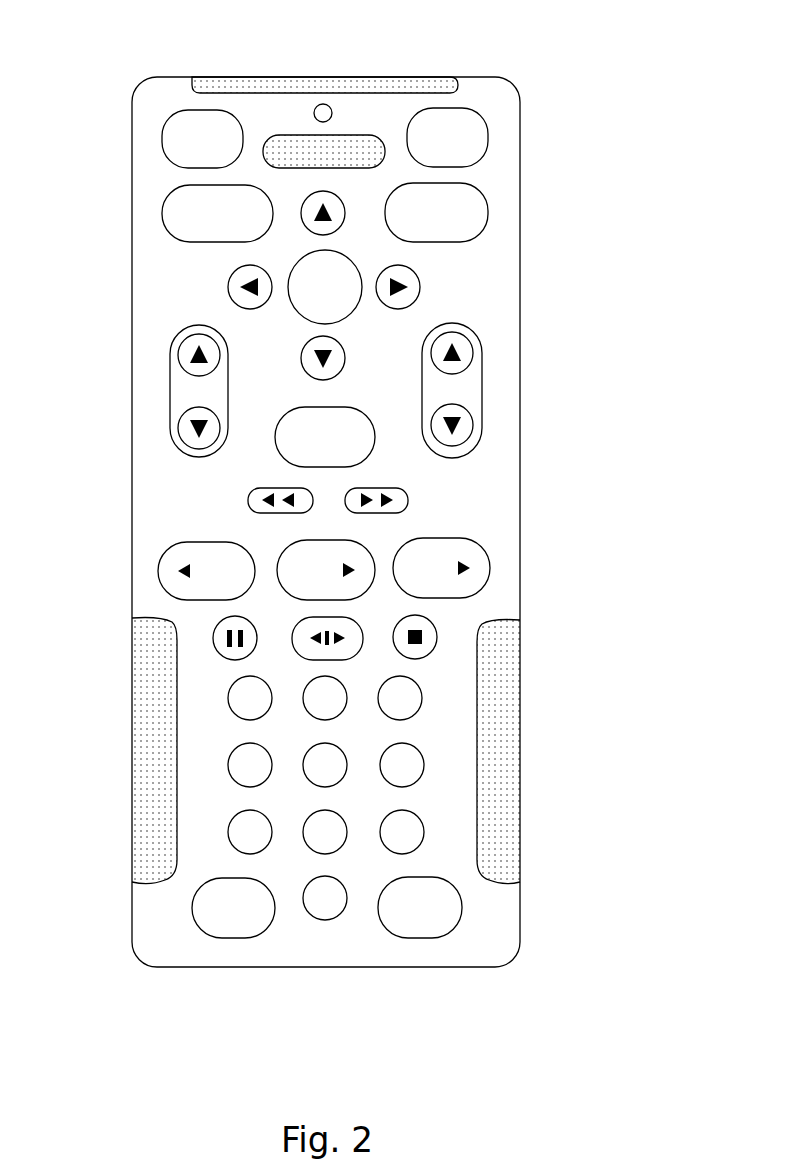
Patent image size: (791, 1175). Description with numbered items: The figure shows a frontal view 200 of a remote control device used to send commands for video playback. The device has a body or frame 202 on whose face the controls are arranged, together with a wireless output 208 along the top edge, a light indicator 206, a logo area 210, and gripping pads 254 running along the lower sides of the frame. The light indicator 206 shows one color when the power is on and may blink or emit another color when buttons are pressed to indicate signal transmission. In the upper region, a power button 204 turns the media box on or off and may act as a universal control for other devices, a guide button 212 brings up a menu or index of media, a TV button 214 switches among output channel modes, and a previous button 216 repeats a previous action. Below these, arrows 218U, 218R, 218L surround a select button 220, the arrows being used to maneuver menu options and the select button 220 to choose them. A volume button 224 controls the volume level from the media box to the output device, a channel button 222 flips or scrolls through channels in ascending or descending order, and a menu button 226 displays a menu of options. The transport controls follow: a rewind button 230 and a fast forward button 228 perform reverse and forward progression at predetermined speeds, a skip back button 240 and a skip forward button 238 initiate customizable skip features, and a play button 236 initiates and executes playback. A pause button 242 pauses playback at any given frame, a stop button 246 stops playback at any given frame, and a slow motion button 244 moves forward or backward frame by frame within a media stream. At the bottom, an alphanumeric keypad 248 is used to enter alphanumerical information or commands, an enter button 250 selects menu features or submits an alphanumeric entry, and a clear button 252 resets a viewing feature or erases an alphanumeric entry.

The frontal view 200 is at (671, 130).
The body or frame 202 is at (470, 92).
The power button 204 is at (162, 138).
The light indicator 206 is at (332, 113).
The wireless output 208 is at (250, 78).
The logo area 210 is at (385, 150).
The guide button 212 is at (488, 136).
The TV button 214 is at (162, 212).
The previous button 216 is at (488, 212).
The up arrow 218U is at (310, 232).
The left arrow 218L is at (228, 289).
The right arrow 218R is at (420, 287).
The select button 220 is at (302, 310).
The channel button 222 is at (482, 392).
The volume button 224 is at (170, 392).
The menu button 226 is at (276, 440).
The fast forward button 228 is at (408, 500).
The rewind button 230 is at (248, 502).
The play button 236 is at (277, 574).
The skip forward button 238 is at (490, 568).
The skip back button 240 is at (158, 571).
The pause button 242 is at (236, 660).
The slow motion button 244 is at (363, 661).
The stop button 246 is at (437, 637).
The alphanumeric keypad 248 is at (360, 795).
The enter button 250 is at (462, 908).
The clear button 252 is at (192, 908).
The gripping pads 254 is at (150, 826).